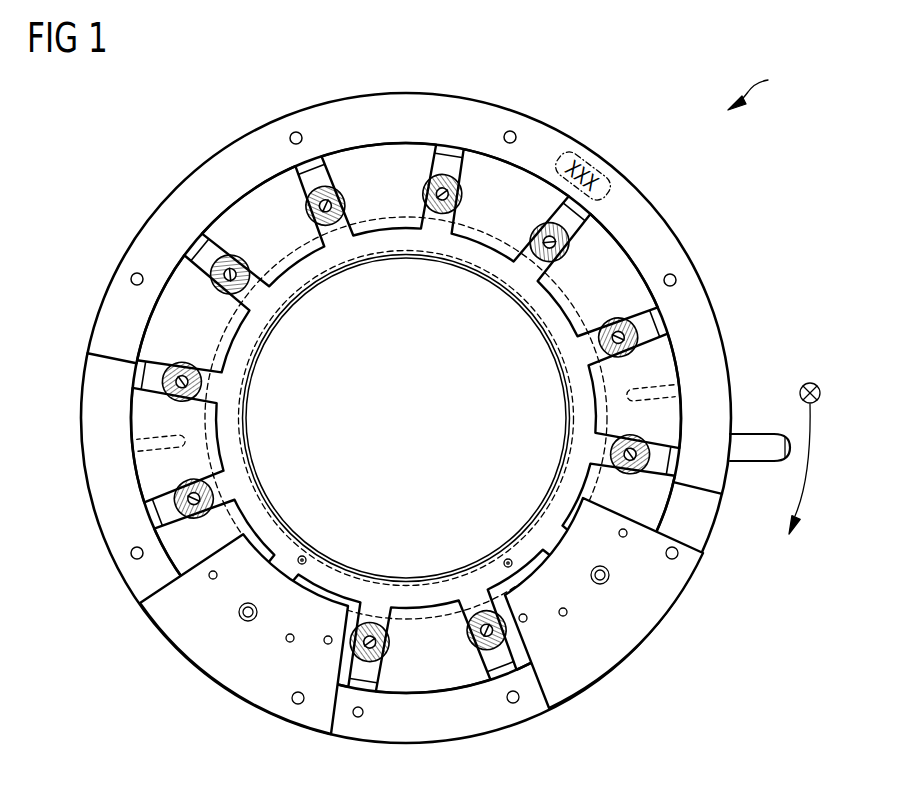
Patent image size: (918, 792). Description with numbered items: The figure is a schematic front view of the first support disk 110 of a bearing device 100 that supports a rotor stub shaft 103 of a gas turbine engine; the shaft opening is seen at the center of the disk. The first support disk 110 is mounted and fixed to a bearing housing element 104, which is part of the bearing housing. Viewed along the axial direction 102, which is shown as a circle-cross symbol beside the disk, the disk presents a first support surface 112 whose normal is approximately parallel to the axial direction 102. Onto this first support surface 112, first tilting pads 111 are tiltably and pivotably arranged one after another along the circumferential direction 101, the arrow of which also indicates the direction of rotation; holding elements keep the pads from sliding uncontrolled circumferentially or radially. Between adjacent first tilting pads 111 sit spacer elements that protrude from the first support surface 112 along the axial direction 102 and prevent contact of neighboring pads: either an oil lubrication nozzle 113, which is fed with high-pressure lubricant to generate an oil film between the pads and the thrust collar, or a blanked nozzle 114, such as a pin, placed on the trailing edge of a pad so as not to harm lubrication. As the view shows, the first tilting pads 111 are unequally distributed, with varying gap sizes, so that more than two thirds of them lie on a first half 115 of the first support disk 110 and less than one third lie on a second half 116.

The bearing device 100 is at (769, 85).
The circumferential direction 101 is at (808, 472).
The axial direction 102 is at (815, 383).
The rotor stub shaft 103 is at (394, 466).
The bearing housing element 104 is at (637, 627).
The first support disk 110 is at (647, 217).
The first tilting pad 111 is at (386, 158).
The first support surface 112 is at (187, 548).
The oil lubrication nozzle 113 is at (312, 156).
The blanked nozzle 114 is at (660, 460).
The first half 115 is at (730, 368).
The second half 116 is at (703, 517).